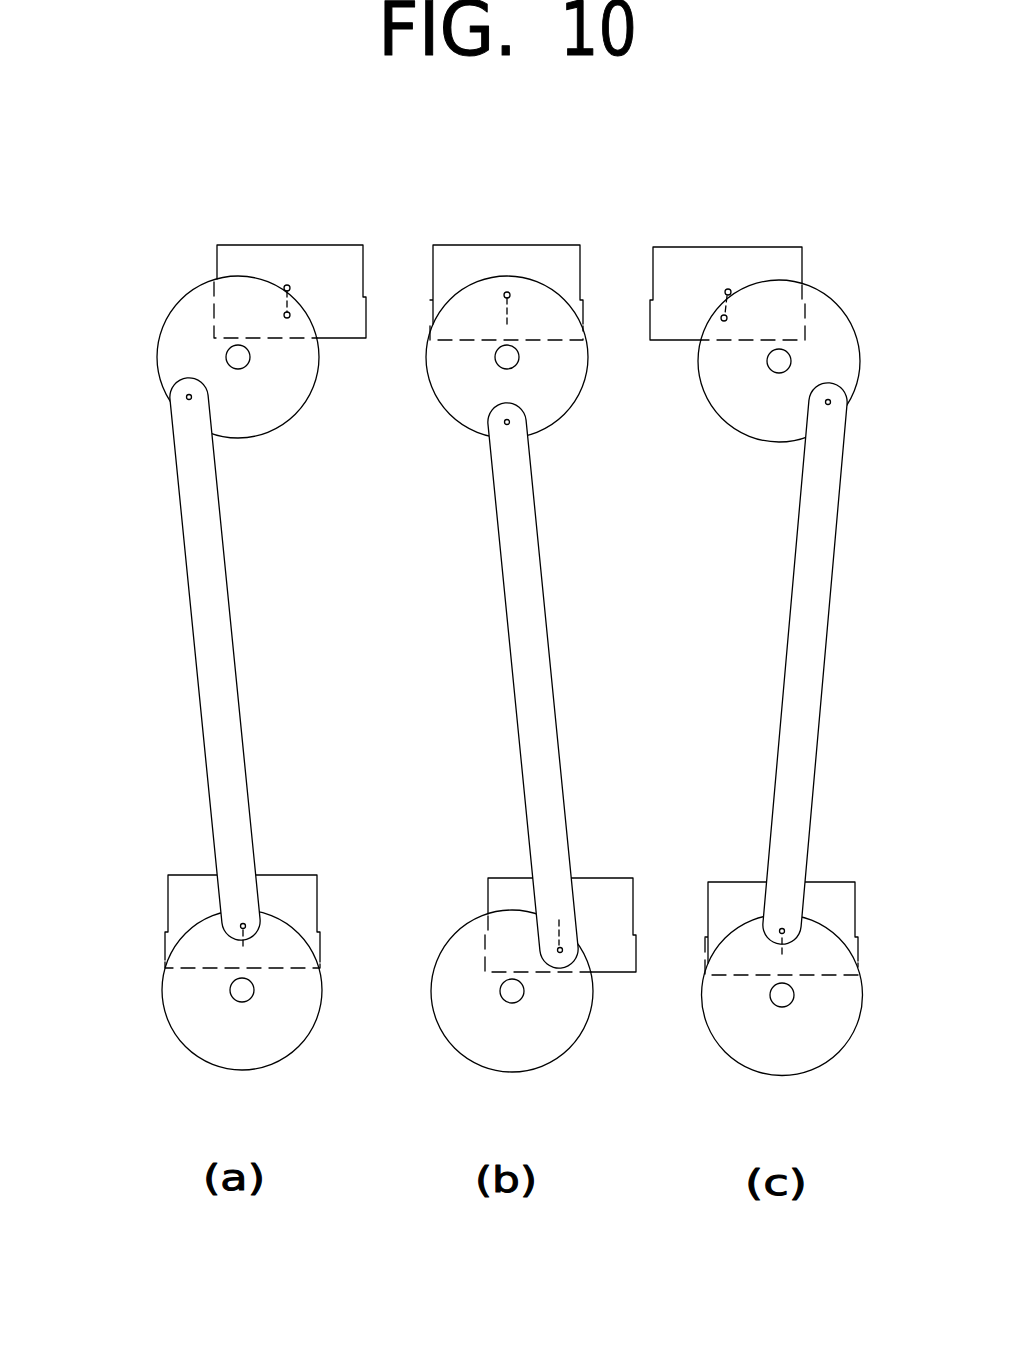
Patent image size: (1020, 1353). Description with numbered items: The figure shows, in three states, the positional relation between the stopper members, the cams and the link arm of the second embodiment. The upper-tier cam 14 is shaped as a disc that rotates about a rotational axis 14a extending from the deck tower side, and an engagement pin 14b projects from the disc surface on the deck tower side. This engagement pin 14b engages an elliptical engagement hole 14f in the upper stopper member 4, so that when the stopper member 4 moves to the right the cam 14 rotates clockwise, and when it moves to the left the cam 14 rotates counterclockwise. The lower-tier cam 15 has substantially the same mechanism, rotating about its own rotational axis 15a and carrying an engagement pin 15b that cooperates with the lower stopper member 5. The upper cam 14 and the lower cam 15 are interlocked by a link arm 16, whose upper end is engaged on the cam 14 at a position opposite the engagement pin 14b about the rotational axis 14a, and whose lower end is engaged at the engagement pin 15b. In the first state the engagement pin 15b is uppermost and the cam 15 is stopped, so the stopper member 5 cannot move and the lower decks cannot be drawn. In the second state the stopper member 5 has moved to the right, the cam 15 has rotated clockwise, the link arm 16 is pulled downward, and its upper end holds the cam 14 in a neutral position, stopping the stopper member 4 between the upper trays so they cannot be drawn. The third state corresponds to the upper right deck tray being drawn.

The stopper member 4 is at (228, 267).
The stopper member 5 is at (290, 892).
The cam 14 is at (248, 415).
The rotational axis 14a is at (233, 357).
The engagement pin 14b is at (290, 315).
The engagement hole 14f is at (288, 286).
The cam 15 is at (202, 1037).
The rotational axis 15a is at (232, 994).
The engagement pin 15b is at (240, 925).
The link arm 16 is at (223, 698).